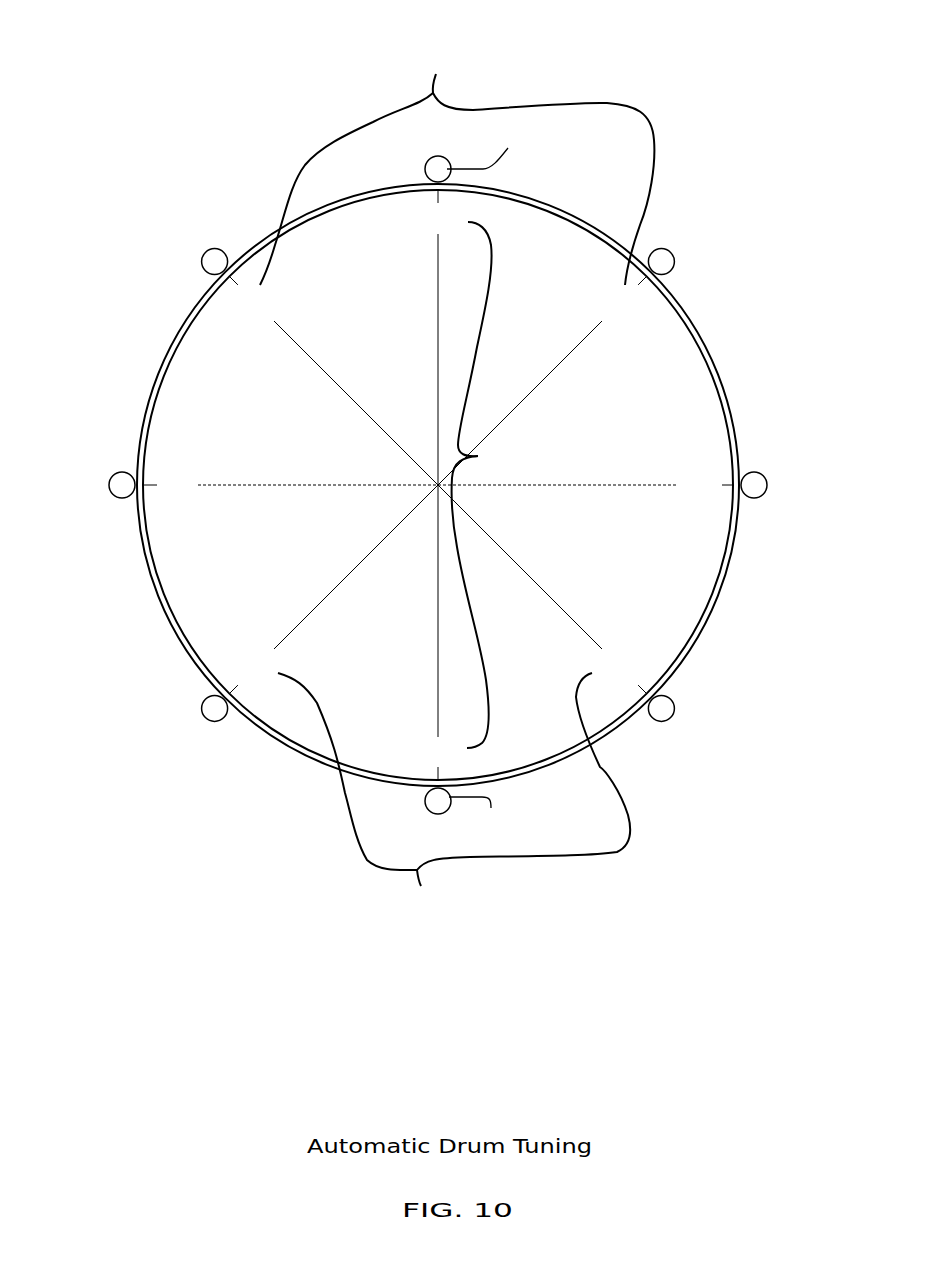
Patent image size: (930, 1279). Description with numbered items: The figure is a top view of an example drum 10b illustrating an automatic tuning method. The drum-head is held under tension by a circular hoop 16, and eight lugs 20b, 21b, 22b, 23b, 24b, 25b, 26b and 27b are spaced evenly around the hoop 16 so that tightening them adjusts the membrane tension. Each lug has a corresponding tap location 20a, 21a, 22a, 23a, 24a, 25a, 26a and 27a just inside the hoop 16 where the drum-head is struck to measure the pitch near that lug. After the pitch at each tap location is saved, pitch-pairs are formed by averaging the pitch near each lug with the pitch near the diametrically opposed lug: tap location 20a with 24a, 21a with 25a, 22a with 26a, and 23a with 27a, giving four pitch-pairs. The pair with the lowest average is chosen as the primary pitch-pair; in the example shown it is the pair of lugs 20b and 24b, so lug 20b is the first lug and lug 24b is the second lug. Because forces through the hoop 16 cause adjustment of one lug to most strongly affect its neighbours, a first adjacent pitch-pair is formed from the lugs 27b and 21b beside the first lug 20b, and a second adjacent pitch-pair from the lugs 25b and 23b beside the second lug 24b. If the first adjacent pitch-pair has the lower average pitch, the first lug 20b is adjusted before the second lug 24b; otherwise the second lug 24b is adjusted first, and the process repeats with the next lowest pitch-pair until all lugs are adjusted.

The drum 10b is at (170, 78).
The hoop 16 is at (721, 373).
The tap location 20a is at (458, 230).
The first lug 20b is at (438, 154).
The tap location 21a is at (643, 315).
The lug 21b is at (683, 253).
The tap location 22a is at (718, 497).
The lug 22b is at (781, 485).
The tap location 23a is at (636, 677).
The lug 23b is at (682, 717).
The tap location 24a is at (457, 763).
The second lug 24b is at (439, 814).
The tap location 25a is at (268, 677).
The lug 25b is at (195, 717).
The tap location 26a is at (195, 497).
The lug 26b is at (97, 485).
The tap location 27a is at (272, 315).
The lug 27b is at (196, 253).